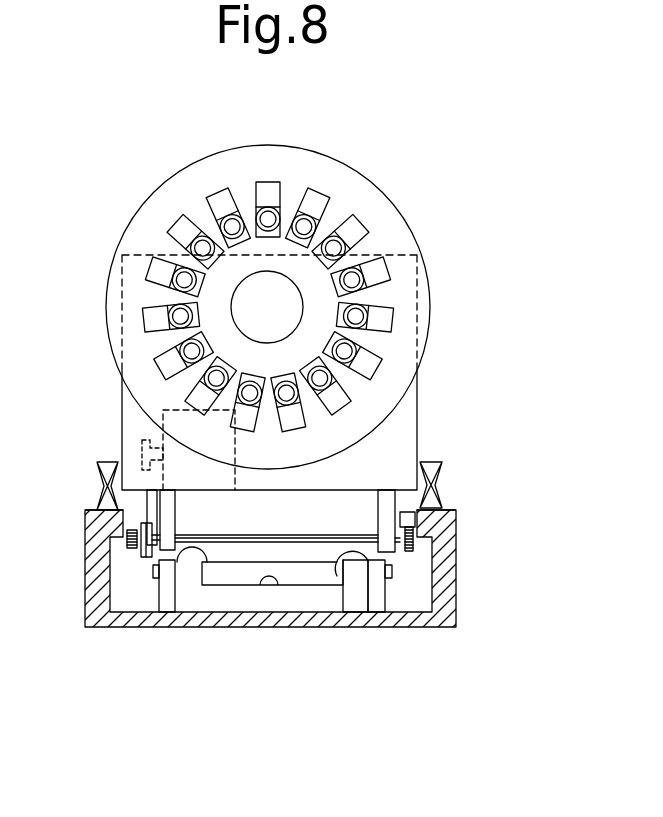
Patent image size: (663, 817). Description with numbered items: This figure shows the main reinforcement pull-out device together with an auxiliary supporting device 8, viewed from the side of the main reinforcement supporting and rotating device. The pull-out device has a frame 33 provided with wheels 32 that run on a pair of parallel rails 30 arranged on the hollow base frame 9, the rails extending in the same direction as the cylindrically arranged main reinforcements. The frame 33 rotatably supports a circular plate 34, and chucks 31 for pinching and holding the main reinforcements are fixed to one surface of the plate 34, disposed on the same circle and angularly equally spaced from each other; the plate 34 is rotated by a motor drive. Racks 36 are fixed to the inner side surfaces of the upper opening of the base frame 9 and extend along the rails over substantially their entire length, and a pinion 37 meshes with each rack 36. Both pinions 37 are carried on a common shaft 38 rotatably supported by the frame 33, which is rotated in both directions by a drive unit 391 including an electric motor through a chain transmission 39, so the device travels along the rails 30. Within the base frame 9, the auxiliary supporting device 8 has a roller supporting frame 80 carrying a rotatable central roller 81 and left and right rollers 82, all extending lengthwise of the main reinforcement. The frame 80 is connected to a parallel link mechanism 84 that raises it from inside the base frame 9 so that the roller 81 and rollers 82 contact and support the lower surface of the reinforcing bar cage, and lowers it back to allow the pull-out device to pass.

The auxiliary supporting device 8 is at (272, 619).
The base frame 9 is at (457, 614).
The rails 30 is at (98, 506).
The chucks 31 is at (312, 190).
The wheels 32 is at (102, 478).
The frame 33 is at (418, 403).
The circular plate 34 is at (347, 163).
The racks 36 is at (128, 522).
The pinion 37 is at (128, 552).
The shaft 38 is at (365, 536).
The chain transmission 39 is at (147, 500).
The roller supporting frame 80 is at (345, 604).
The roller 81 is at (272, 576).
The rollers 82 is at (207, 563).
The parallel link mechanism 84 is at (167, 612).
The drive unit 391 is at (235, 453).